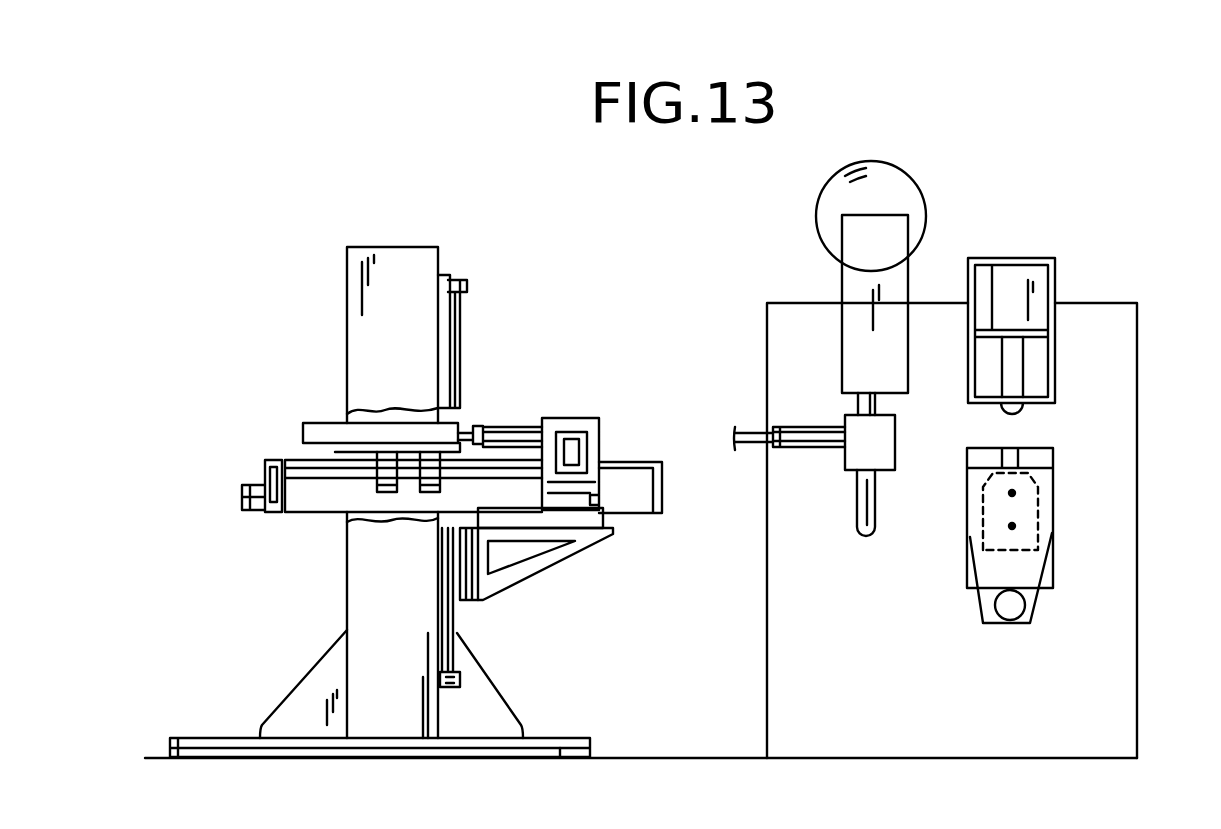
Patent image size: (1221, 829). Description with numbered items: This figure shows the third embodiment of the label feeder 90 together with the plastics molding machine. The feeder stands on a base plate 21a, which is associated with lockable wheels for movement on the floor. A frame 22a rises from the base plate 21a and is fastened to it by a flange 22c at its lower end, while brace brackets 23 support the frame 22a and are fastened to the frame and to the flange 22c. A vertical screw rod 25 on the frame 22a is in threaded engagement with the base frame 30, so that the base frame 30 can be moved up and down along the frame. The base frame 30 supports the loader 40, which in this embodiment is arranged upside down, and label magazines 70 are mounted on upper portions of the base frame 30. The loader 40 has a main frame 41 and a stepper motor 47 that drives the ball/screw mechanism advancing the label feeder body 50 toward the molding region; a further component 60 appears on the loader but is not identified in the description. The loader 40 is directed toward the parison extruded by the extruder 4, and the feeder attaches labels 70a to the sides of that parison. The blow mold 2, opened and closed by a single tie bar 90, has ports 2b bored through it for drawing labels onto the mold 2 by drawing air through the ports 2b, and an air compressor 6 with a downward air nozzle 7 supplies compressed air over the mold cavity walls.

The frame 22a is at (355, 322).
The screw rod 25 is at (463, 308).
The label feeder body 50 is at (312, 423).
The loader 40 is at (293, 462).
The stepper motor 47 is at (253, 485).
The cylinder 60 is at (512, 427).
The label magazines 70 is at (607, 432).
The main frame 41 is at (638, 520).
The base frame 30 is at (553, 555).
The brace brackets 23 is at (315, 688).
The flanges 22c is at (540, 738).
The base plate 21a is at (563, 740).
The label feeder 90 is at (1123, 303).
The extruder 4 is at (888, 233).
The labels 70a is at (888, 440).
The air compressor 6 is at (1032, 258).
The air nozzle 7 is at (1025, 373).
The blow mold 2 is at (1053, 503).
The ports 2b is at (1012, 493).